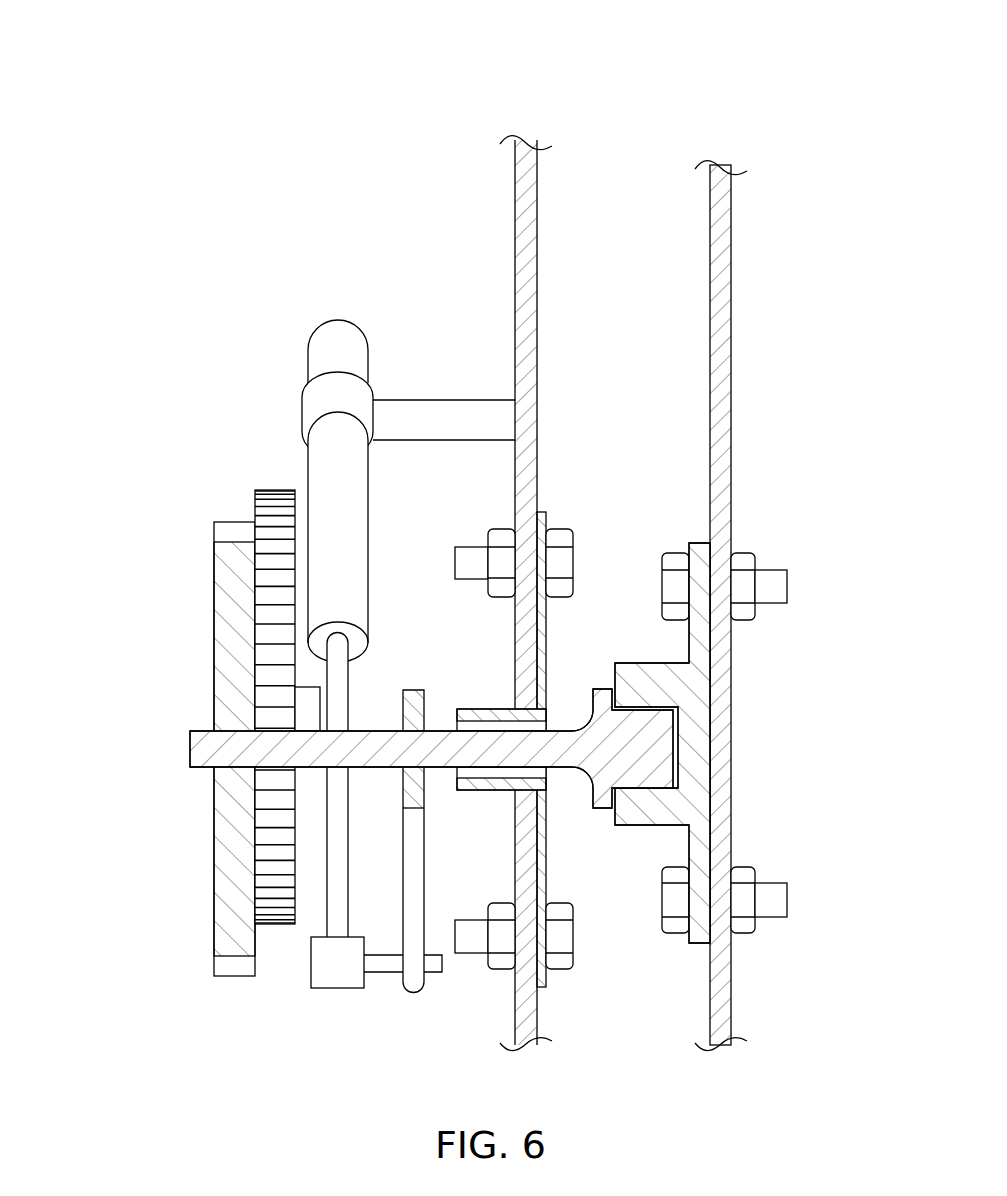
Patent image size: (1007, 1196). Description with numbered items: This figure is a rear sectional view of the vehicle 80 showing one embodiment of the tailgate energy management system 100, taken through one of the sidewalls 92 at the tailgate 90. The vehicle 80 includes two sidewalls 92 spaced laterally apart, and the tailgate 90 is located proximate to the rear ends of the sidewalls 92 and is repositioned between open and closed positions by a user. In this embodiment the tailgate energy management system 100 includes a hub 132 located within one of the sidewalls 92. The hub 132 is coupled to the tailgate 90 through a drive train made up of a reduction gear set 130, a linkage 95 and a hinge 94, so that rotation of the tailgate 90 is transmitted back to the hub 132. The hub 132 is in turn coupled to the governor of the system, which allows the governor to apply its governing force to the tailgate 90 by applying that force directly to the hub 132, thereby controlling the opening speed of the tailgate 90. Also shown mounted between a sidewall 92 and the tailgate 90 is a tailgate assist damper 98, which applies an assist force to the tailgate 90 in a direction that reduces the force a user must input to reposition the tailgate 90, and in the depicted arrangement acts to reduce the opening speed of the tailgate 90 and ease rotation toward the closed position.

The vehicle 80 is at (858, 115).
The tailgate 90 is at (732, 272).
The sidewall 92 is at (539, 171).
The hinge 94 is at (689, 850).
The linkage 95 is at (413, 994).
The tailgate assist damper 98 is at (308, 355).
The tailgate energy management system 100 is at (165, 557).
The reduction gear set 130 is at (213, 950).
The hub 132 is at (312, 705).